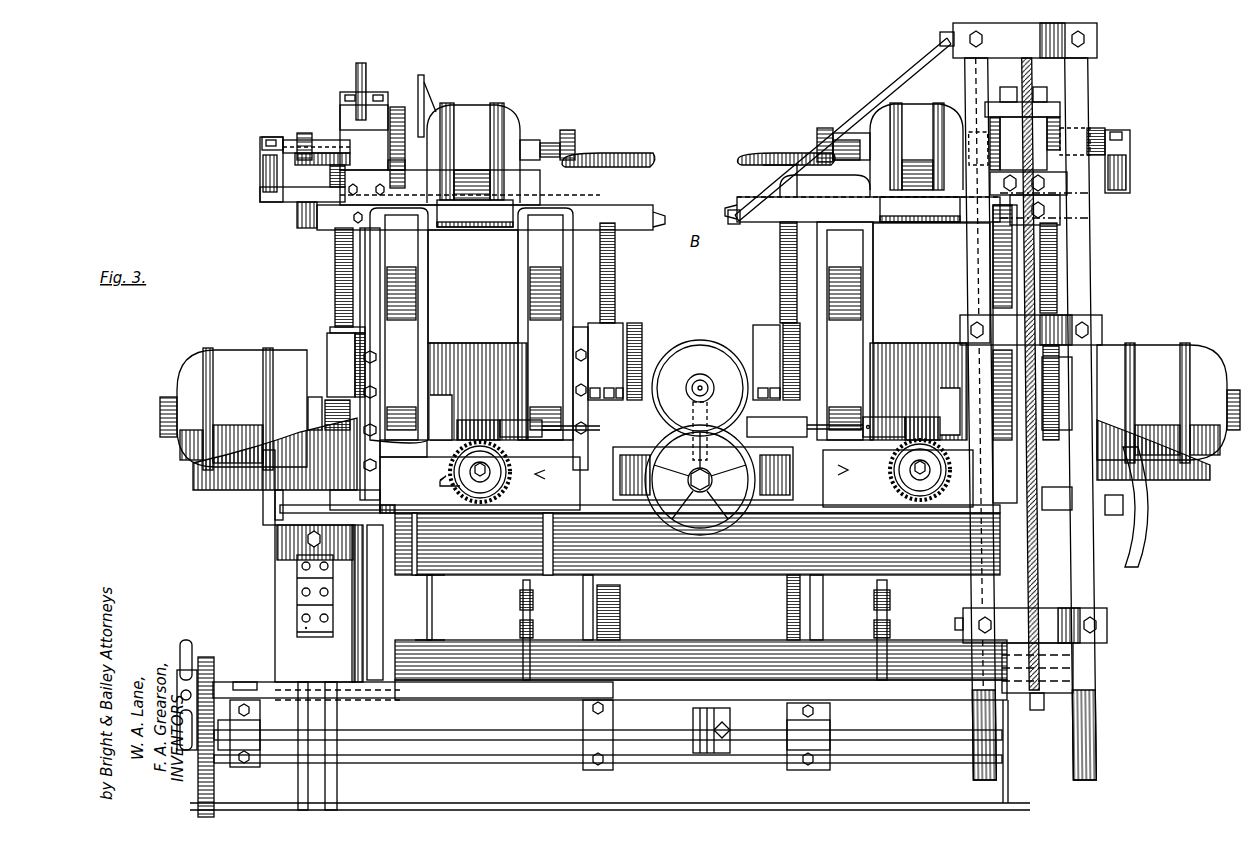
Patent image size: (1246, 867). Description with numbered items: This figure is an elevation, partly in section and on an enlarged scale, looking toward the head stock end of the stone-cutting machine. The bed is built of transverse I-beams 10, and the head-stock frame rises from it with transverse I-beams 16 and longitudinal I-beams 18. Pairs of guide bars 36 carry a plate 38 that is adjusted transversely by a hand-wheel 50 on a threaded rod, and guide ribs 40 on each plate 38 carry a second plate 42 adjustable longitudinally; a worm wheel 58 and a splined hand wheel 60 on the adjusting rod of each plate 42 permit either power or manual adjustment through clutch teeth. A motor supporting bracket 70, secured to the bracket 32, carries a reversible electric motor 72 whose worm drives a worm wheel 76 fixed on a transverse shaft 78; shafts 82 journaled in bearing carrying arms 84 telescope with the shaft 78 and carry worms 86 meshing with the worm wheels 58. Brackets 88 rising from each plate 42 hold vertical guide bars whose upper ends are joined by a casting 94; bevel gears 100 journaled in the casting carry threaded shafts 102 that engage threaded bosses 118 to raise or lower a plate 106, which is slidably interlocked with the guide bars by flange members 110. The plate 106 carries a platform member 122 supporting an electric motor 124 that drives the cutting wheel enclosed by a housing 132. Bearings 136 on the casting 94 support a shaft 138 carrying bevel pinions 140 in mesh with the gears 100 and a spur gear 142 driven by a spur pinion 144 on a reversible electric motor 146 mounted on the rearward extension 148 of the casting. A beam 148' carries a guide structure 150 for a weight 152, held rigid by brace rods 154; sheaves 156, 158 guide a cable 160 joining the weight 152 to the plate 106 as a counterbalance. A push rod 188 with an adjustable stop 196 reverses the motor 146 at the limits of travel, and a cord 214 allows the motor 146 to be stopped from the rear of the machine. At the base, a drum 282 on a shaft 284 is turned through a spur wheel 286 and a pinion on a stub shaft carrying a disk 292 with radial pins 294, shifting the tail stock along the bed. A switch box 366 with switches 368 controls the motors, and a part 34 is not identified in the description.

The I-beams 10 is at (610, 746).
The I-beams 16 is at (690, 655).
The I-beams 18 is at (427, 616).
The bracket 32 is at (770, 500).
The hand wheel 34 is at (706, 532).
The guide bars 36 is at (345, 495).
The plate 38 is at (480, 483).
The guide ribs 40 is at (562, 493).
The second plate 42 is at (403, 449).
The hand-wheel 50 is at (263, 512).
The worm wheel 58 is at (441, 491).
The hand wheel 60 is at (497, 495).
The motor supporting bracket 70 is at (688, 478).
The reversible electric motor 72 is at (705, 345).
The worm wheel 76 is at (690, 390).
The transverse shaft 78 is at (795, 425).
The shafts 82 is at (548, 420).
The bearing carrying arms 84 is at (510, 420).
The worms 86 is at (478, 420).
The brackets 88 is at (399, 325).
The casting 94 is at (312, 220).
The bevel gear 100 is at (315, 167).
The threaded shaft 102 is at (335, 298).
The plate 106 is at (448, 350).
The flange members 110 is at (380, 380).
The threaded bosses 118 is at (330, 365).
The platform member 122 is at (193, 486).
The electric motor 124 is at (233, 409).
The housing 132 is at (635, 323).
The bearings 136 is at (260, 178).
The shaft 138 is at (322, 144).
The bevel pinions 140 is at (300, 136).
The spur gear 142 is at (397, 107).
The spur pinion 144 is at (390, 163).
The reversible electric motor 146 is at (493, 153).
The rearward extension 148 is at (457, 404).
The beam 148' is at (475, 213).
The guide structure 150 is at (1107, 597).
The weight 152 is at (1056, 693).
The brace rods 154 is at (920, 55).
The sheave 156 is at (1032, 90).
The sheave 158 is at (356, 70).
The cable 160 is at (1070, 225).
The push rod 188 is at (518, 278).
The stop 196 is at (520, 616).
The cord 214 is at (428, 97).
The drum 282 is at (690, 718).
The shaft 284 is at (478, 740).
The spur wheel 286 is at (214, 680).
The disk 292 is at (186, 670).
The radial pins 294 is at (186, 640).
The switch box 366 is at (319, 603).
The switches 368 is at (297, 600).